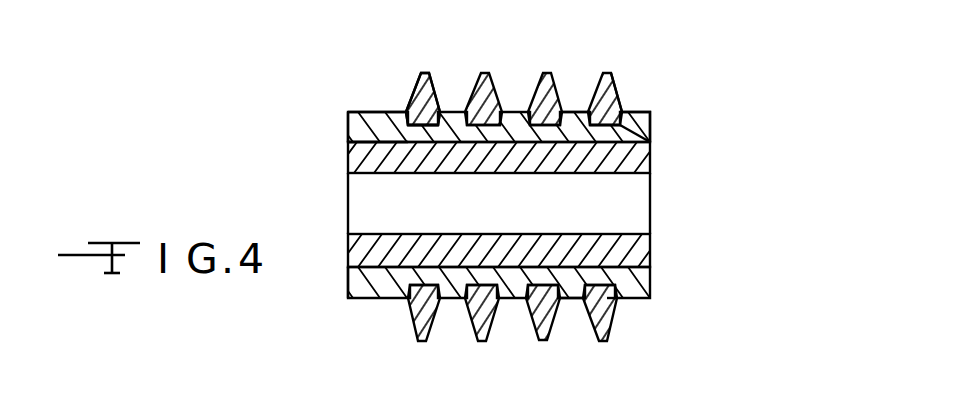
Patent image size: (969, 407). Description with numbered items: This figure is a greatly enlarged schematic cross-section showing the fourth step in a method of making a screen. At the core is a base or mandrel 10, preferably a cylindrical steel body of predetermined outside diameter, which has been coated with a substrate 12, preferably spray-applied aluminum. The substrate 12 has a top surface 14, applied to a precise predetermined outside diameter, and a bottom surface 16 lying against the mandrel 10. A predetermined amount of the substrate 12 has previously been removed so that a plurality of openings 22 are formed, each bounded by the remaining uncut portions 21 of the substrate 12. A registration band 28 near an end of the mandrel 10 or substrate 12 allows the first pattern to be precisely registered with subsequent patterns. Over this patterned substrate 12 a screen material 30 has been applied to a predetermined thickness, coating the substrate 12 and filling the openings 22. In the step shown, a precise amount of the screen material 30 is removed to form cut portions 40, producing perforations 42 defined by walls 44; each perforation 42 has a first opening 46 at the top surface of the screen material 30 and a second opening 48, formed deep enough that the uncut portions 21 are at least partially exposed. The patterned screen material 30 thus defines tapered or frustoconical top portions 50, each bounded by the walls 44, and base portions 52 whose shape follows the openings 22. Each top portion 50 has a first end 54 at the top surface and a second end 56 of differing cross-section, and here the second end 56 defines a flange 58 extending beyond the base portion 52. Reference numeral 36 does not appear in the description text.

The mandrel 10 is at (343, 157).
The substrate 12 is at (338, 126).
The top surface 14 is at (400, 112).
The bottom surface 16 is at (380, 143).
The uncut portions 21 is at (577, 112).
The opening 22 is at (420, 127).
The registration band 28 is at (382, 112).
The screen material 30 is at (415, 92).
The lower conductive bumps 36 is at (453, 300).
The cut portions 40 is at (440, 76).
The perforations 42 is at (509, 96).
The walls 44 is at (575, 112).
The first opening 46 is at (557, 342).
The second opening 48 is at (576, 298).
The top portions 50 is at (615, 97).
The base portions 52 is at (617, 128).
The first end 54 is at (607, 73).
The second end 56 is at (590, 116).
The flange 58 is at (624, 115).